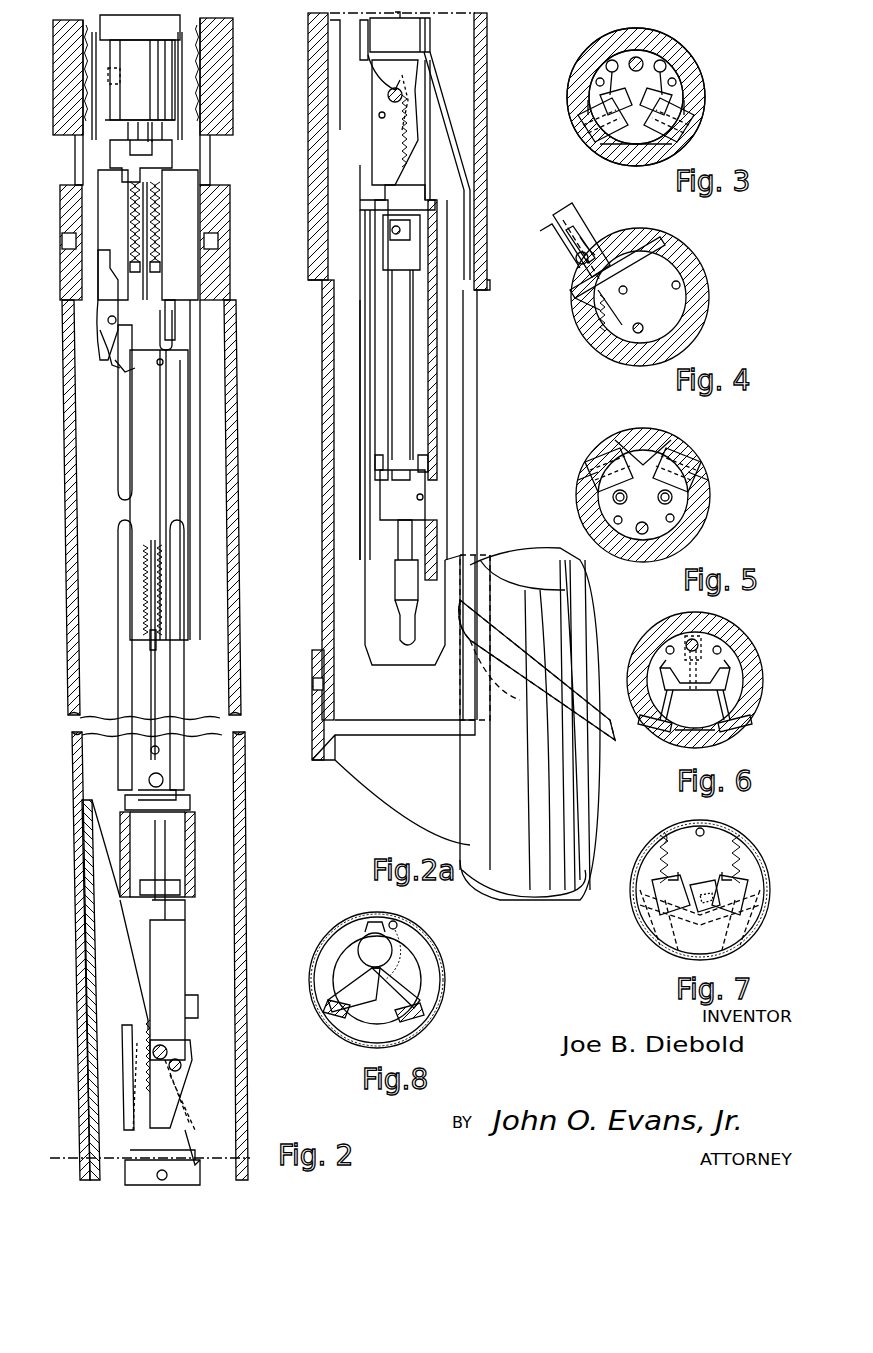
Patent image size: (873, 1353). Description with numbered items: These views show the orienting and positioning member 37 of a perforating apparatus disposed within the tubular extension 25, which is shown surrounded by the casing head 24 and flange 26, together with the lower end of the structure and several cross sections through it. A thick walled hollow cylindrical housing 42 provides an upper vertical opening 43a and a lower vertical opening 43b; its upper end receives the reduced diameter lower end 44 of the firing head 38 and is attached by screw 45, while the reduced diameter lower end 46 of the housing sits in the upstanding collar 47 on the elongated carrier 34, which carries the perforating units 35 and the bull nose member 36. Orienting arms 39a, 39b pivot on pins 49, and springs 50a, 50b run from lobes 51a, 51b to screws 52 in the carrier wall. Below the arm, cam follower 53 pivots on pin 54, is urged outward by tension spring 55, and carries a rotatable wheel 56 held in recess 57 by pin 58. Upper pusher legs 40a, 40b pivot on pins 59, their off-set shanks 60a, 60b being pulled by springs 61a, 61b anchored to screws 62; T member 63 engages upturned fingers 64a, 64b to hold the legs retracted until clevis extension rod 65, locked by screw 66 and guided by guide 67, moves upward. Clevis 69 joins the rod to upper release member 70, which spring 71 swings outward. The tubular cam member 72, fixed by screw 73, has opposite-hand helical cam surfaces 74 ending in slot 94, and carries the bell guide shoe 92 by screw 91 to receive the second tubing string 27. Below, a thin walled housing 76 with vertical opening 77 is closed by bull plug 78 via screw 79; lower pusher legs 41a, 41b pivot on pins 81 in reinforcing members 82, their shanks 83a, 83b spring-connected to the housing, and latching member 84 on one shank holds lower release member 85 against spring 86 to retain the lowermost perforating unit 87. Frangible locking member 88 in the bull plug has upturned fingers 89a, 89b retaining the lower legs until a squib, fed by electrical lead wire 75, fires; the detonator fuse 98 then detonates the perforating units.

In FIG. 2, the casing head 24 is at (215, 82).
In FIG. 2, the tubular extension 25 is at (66, 372).
In FIG. 2A, the tubular extension 25 is at (328, 50).
In FIG. 2, the flange 26 is at (62, 203).
In FIG. 2A, the second tubing string 27 is at (560, 785).
In FIG. 2, the elongated carrier 34 is at (198, 1005).
In FIG. 2A, the elongated carrier 34 is at (368, 75).
In FIG. 2, the perforating units 35 is at (130, 1170).
In FIG. 2A, the bull nose member 36 is at (350, 386).
In FIG. 2, the orienting and positioning member 37 is at (198, 461).
In FIG. 2, the firing head 38 is at (108, 30).
In FIG. 2, the orienting arm 39a is at (118, 208).
In FIG. 3, the orienting arm 39a is at (600, 130).
In FIG. 2, the orienting arm 39b is at (170, 206).
In FIG. 3, the orienting arm 39b is at (692, 136).
In FIG. 2, the upper pusher leg 40a is at (135, 695).
In FIG. 5, the upper pusher leg 40a is at (600, 458).
In FIG. 6, the upper pusher leg 40a is at (645, 722).
In FIG. 2, the upper pusher leg 40b is at (172, 696).
In FIG. 5, the upper pusher leg 40b is at (680, 460).
In FIG. 6, the upper pusher leg 40b is at (740, 728).
In FIG. 2A, the lower pusher leg 41a is at (378, 346).
In FIG. 7, the lower pusher leg 41a is at (650, 930).
In FIG. 8, the lower pusher leg 41a is at (335, 1012).
In FIG. 2A, the lower pusher leg 41b is at (418, 348).
In FIG. 7, the lower pusher leg 41b is at (748, 930).
In FIG. 8, the lower pusher leg 41b is at (418, 1012).
In FIG. 2, the housing 42 is at (150, 495).
In FIG. 3, the housing 42 is at (636, 97).
In FIG. 4, the housing 42 is at (690, 333).
In FIG. 5, the housing 42 is at (700, 538).
In FIG. 6, the housing 42 is at (735, 628).
In FIG. 2, the upper vertical opening 43a is at (163, 340).
In FIG. 3, the upper vertical opening 43a is at (660, 170).
In FIG. 2, the lower vertical opening 43b is at (180, 793).
In FIG. 5, the lower vertical opening 43b is at (668, 418).
In FIG. 6, the lower vertical opening 43b is at (692, 733).
In FIG. 2, the reduced diameter lower end 44 is at (150, 65).
In FIG. 2, the screw 45 is at (108, 76).
In FIG. 2, the reduced diameter lower end 46 is at (190, 838).
In FIG. 2, the upstanding collar 47 is at (182, 885).
In FIG. 3, the pins 49 is at (575, 115).
In FIG. 2, the spring 50a is at (130, 200).
In FIG. 3, the spring 50a is at (600, 60).
In FIG. 2, the spring 50b is at (158, 185).
In FIG. 3, the spring 50b is at (670, 60).
In FIG. 3, the lobe 51a is at (600, 88).
In FIG. 3, the lobe 51b is at (672, 92).
In FIG. 2, the screws 52 is at (150, 272).
In FIG. 2, the cam follower 53 is at (100, 280).
In FIG. 4, the cam follower 53 is at (563, 257).
In FIG. 4, the pin 54 is at (636, 240).
In FIG. 2, the tension spring 55 is at (150, 300).
In FIG. 4, the tension spring 55 is at (600, 320).
In FIG. 2, the rotatable wheel 56 is at (95, 345).
In FIG. 4, the rotatable wheel 56 is at (548, 213).
In FIG. 2, the recess 57 is at (100, 322).
In FIG. 4, the recess 57 is at (562, 212).
In FIG. 2, the pin 58 is at (120, 366).
In FIG. 4, the pin 58 is at (585, 226).
In FIG. 5, the pins 59 is at (588, 482).
In FIG. 5, the off-set shank 60a is at (612, 497).
In FIG. 5, the off-set shank 60b is at (672, 497).
In FIG. 2, the spring 61a is at (145, 598).
In FIG. 5, the spring 61a is at (616, 502).
In FIG. 2, the spring 61b is at (165, 598).
In FIG. 5, the spring 61b is at (668, 502).
In FIG. 2, the screws 62 is at (152, 642).
In FIG. 2, the T member 63 is at (160, 775).
In FIG. 6, the T member 63 is at (675, 645).
In FIG. 6, the upturned finger 64a is at (652, 702).
In FIG. 6, the upturned finger 64b is at (738, 703).
In FIG. 2, the clevis extension rod 65 is at (152, 660).
In FIG. 3, the clevis extension rod 65 is at (636, 58).
In FIG. 4, the clevis extension rod 65 is at (630, 335).
In FIG. 5, the clevis extension rod 65 is at (644, 535).
In FIG. 6, the clevis extension rod 65 is at (690, 638).
In FIG. 2, the screw 66 is at (152, 752).
In FIG. 6, the screw 66 is at (695, 690).
In FIG. 2, the guide 67 is at (150, 793).
In FIG. 2, the clevis 69 is at (175, 972).
In FIG. 2, the upper release member 70 is at (190, 1078).
In FIG. 2, the spring 71 is at (138, 1025).
In FIG. 2, the tubular cam member 72 is at (86, 870).
In FIG. 2A, the tubular cam member 72 is at (325, 330).
In FIG. 2, the screw 73 is at (88, 898).
In FIG. 2A, the helical cam surfaces 74 is at (460, 148).
In FIG. 2, the electrical lead wire 75 is at (185, 135).
In FIG. 2A, the electrical lead wire 75 is at (425, 500).
In FIG. 3, the electrical lead wire 75 is at (676, 80).
In FIG. 4, the electrical lead wire 75 is at (680, 284).
In FIG. 5, the electrical lead wire 75 is at (676, 520).
In FIG. 6, the electrical lead wire 75 is at (722, 652).
In FIG. 7, the electrical lead wire 75 is at (705, 828).
In FIG. 8, the electrical lead wire 75 is at (400, 918).
In FIG. 2A, the housing 76 is at (363, 268).
In FIG. 7, the housing 76 is at (752, 835).
In FIG. 8, the housing 76 is at (432, 940).
In FIG. 2A, the vertical opening 77 is at (398, 272).
In FIG. 2A, the bull plug 78 is at (392, 625).
In FIG. 8, the bull plug 78 is at (352, 1033).
In FIG. 2A, the screw 79 is at (438, 545).
In FIG. 7, the pins 81 is at (640, 892).
In FIG. 7, the reinforcing members 82 is at (752, 892).
In FIG. 7, the axially off-set shank 83a is at (660, 850).
In FIG. 7, the axially off-set shank 83b is at (735, 860).
In FIG. 2A, the latching member 84 is at (430, 195).
In FIG. 7, the latching member 84 is at (705, 885).
In FIG. 2A, the lower release member 85 is at (375, 140).
In FIG. 2A, the spring 86 is at (388, 102).
In FIG. 2A, the lowermost perforating unit 87 is at (415, 36).
In FIG. 2A, the frangible locking member 88 is at (385, 500).
In FIG. 8, the frangible locking member 88 is at (365, 942).
In FIG. 2A, the upturned finger 89a is at (392, 488).
In FIG. 8, the upturned finger 89a is at (352, 980).
In FIG. 2A, the upturned finger 89b is at (428, 474).
In FIG. 8, the upturned finger 89b is at (405, 985).
In FIG. 2A, the screw 91 is at (312, 682).
In FIG. 2A, the bell guide shoe 92 is at (360, 765).
In FIG. 2A, the slot 94 is at (480, 382).
In FIG. 2, the detonator fuse 98 is at (78, 135).
In FIG. 2A, the detonator fuse 98 is at (360, 28).
In FIG. 3, the detonator fuse 98 is at (596, 78).
In FIG. 4, the detonator fuse 98 is at (628, 287).
In FIG. 5, the detonator fuse 98 is at (614, 522).
In FIG. 6, the detonator fuse 98 is at (665, 650).